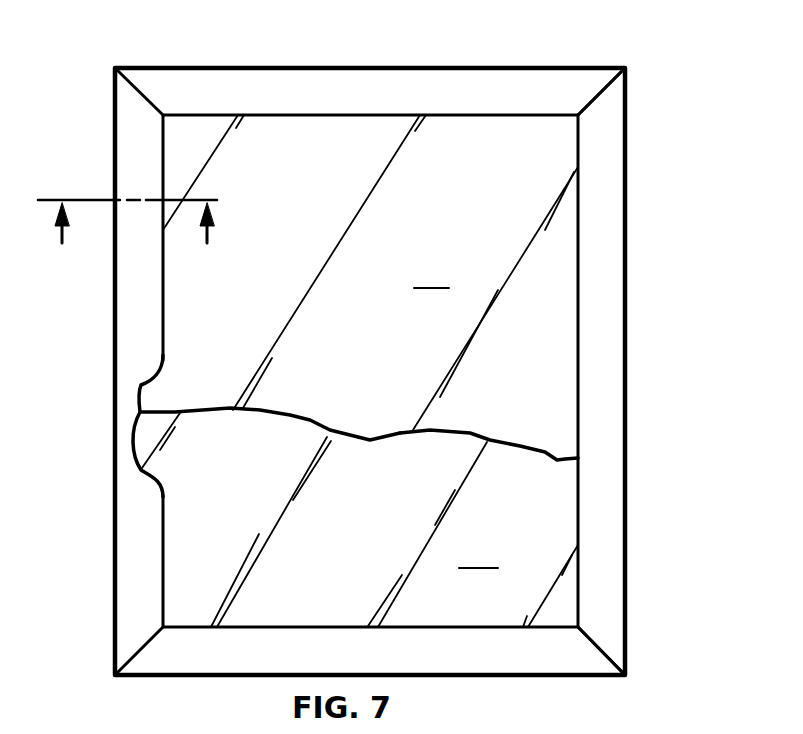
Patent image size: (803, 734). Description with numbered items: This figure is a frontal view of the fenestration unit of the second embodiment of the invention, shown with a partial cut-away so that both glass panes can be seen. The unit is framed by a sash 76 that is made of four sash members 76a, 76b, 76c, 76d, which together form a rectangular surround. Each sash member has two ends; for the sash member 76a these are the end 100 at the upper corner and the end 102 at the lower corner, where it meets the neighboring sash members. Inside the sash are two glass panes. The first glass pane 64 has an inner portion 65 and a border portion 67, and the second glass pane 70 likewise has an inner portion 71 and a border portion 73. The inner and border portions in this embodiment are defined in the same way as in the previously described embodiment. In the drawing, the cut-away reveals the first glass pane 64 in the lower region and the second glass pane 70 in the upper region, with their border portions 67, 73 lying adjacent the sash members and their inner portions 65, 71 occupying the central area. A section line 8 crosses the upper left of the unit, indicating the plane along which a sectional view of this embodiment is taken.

The upper right corner of frame 100 is at (602, 99).
The lower right corner of frame 102 is at (608, 652).
The frame 76 is at (358, 379).
The right side of frame 76a is at (614, 346).
The bottom side of frame 76b is at (487, 665).
The left side of frame 76c is at (132, 578).
The top side of frame 76d is at (390, 80).
The upper panel portion 70 is at (370, 272).
The lower panel portion 64 is at (360, 520).
The fracture line 71 is at (265, 395).
The fracture line portion 65 is at (350, 456).
The upper notch lip 73 is at (158, 392).
The lower notch lip 67 is at (158, 476).
The section line 8- 8 is at (127, 241).